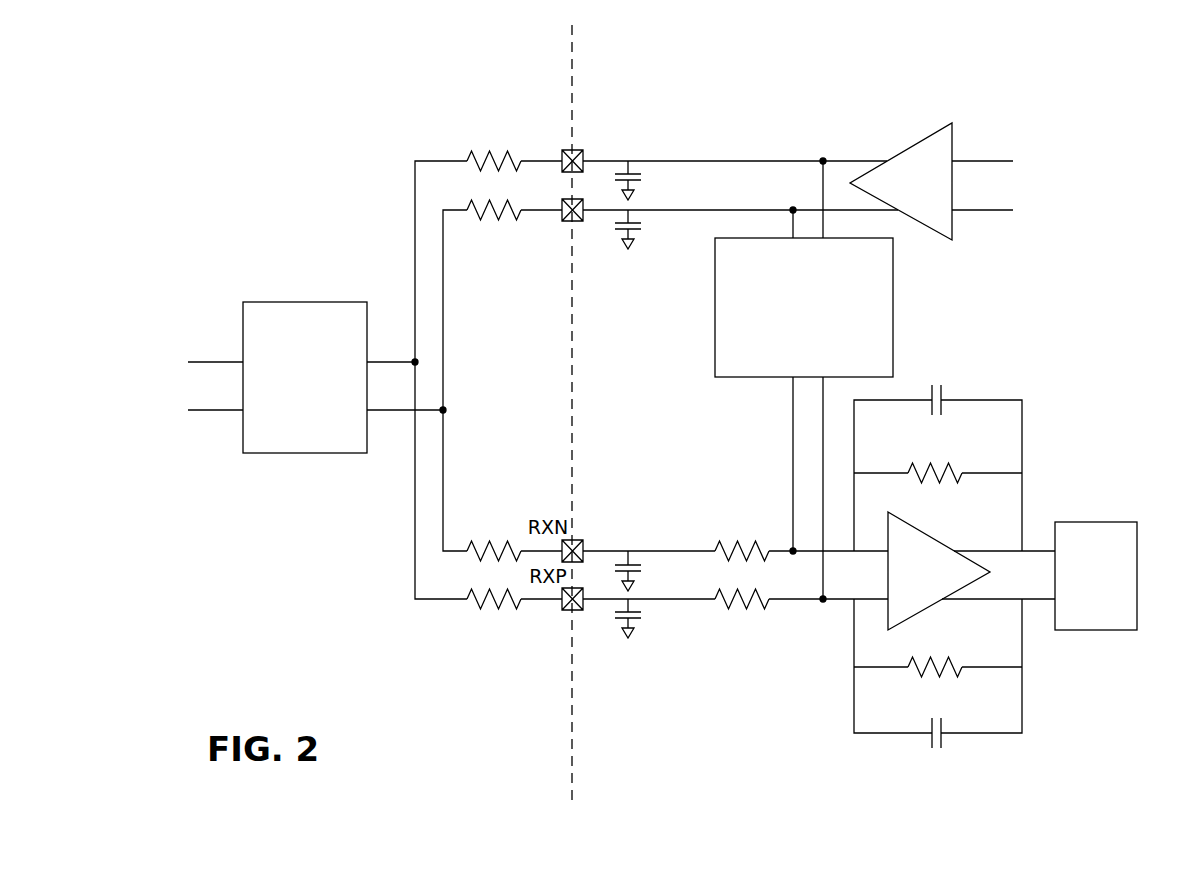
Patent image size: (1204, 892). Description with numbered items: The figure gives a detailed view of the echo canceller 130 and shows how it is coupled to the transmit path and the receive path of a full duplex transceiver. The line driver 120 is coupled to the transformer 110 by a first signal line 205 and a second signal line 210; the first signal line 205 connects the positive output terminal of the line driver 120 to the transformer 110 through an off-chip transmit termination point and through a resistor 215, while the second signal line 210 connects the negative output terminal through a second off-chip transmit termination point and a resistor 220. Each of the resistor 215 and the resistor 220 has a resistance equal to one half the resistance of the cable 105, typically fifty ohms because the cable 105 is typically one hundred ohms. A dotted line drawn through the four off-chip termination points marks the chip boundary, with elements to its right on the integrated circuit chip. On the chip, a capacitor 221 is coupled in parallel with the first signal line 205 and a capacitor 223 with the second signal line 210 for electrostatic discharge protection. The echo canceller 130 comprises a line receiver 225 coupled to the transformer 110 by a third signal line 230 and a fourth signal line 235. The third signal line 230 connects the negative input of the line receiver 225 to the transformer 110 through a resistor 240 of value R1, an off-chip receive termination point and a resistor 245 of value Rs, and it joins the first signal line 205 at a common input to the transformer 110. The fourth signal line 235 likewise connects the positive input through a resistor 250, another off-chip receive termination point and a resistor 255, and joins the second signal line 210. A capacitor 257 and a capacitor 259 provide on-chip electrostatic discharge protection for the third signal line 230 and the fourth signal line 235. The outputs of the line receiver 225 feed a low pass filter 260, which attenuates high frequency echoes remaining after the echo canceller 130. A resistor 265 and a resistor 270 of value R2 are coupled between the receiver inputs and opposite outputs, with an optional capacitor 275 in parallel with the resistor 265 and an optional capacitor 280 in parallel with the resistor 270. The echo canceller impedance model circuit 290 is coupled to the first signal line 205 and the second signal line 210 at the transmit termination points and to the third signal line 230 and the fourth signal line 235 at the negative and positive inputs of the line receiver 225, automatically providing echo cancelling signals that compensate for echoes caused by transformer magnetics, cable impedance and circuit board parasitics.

The cable 105 is at (216, 361).
The transformer 110 is at (312, 301).
The line driver 120 is at (953, 183).
The echo canceller 130 is at (1052, 330).
The first signal line 205 is at (751, 160).
The second signal line 210 is at (750, 210).
The resistor 215 is at (487, 151).
The resistor 220 is at (493, 221).
The capacitor 221 is at (641, 177).
The capacitor 223 is at (641, 225).
The line receiver 225 is at (991, 572).
The third signal line 230 is at (415, 518).
The fourth signal line 235 is at (443, 443).
The resistor 240 is at (760, 611).
The resistor 245 is at (493, 611).
The resistor 250 is at (734, 542).
The resistor 255 is at (489, 540).
The capacitor 257 is at (643, 619).
The capacitor 259 is at (643, 571).
The low pass filter 260 is at (1107, 521).
The resistor 265 is at (958, 470).
The resistor 270 is at (958, 664).
The capacitor 275 is at (945, 395).
The capacitor 280 is at (953, 738).
The echo canceller impedance model circuit 290 is at (760, 378).